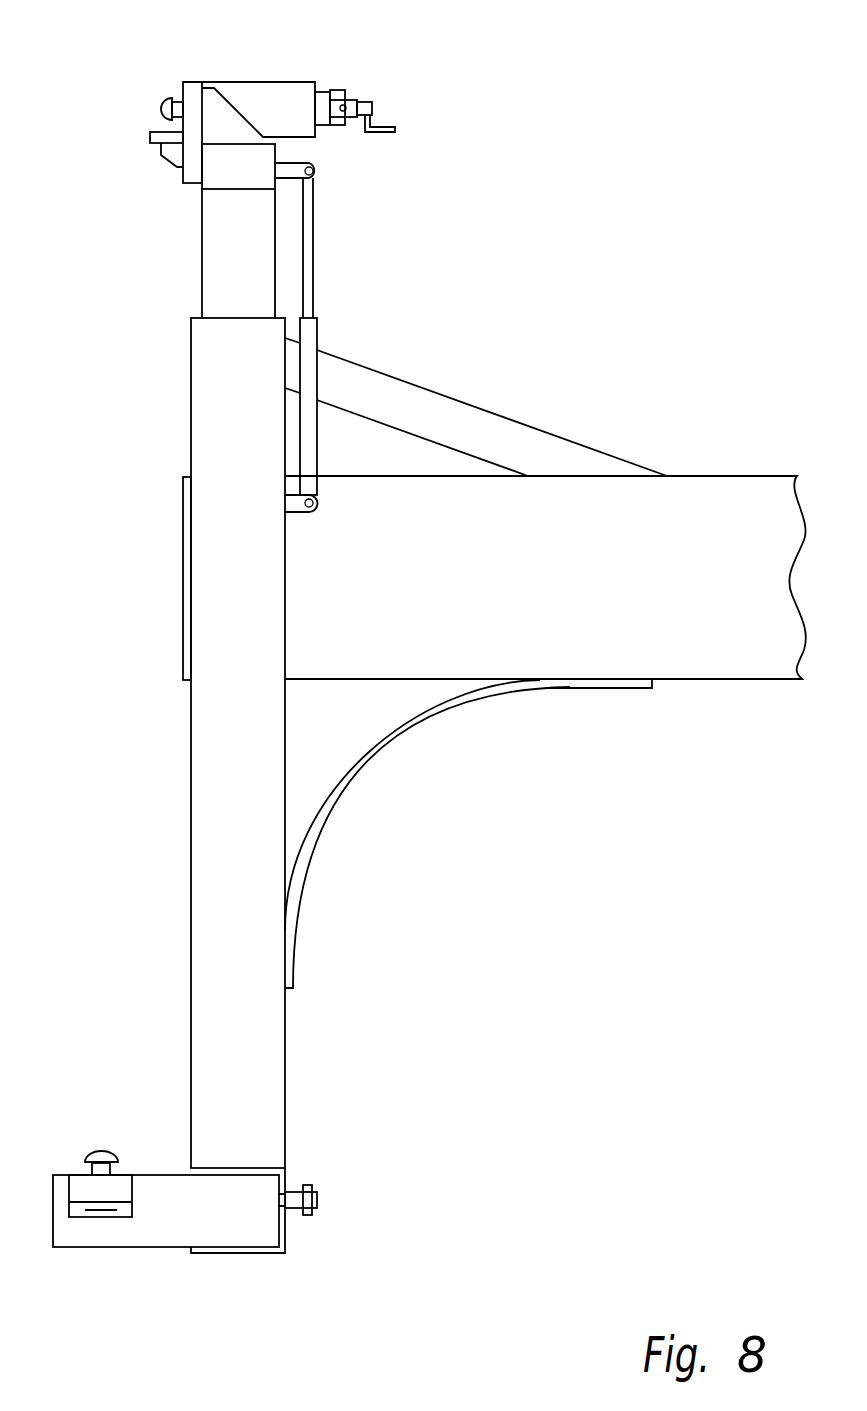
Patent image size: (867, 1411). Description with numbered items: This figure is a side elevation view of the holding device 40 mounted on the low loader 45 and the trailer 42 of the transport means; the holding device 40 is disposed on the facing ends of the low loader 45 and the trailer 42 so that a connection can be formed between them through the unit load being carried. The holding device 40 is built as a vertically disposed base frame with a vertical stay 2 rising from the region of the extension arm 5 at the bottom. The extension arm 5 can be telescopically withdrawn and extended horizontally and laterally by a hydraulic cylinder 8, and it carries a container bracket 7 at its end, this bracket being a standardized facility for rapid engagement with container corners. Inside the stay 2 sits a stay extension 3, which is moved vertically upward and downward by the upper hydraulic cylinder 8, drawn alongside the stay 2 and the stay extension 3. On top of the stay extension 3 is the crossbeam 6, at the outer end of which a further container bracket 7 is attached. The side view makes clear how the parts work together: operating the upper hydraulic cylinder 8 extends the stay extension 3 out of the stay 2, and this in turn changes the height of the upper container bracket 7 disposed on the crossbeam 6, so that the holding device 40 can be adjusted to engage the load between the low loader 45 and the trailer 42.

The vertical stay 2 is at (249, 854).
The stay extension 3 is at (251, 274).
The extension arm 5 is at (208, 1224).
The crossbeam 6 is at (222, 170).
The container bracket 7 is at (168, 104).
The hydraulic cylinder 8 is at (311, 331).
The holding device 40 is at (424, 76).
The trailer 42 is at (621, 593).
The low loader 45 is at (543, 577).